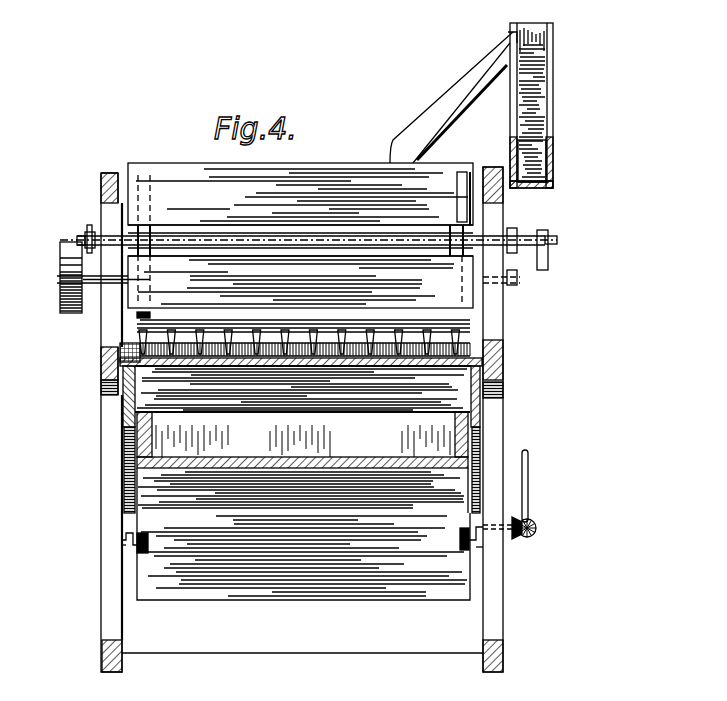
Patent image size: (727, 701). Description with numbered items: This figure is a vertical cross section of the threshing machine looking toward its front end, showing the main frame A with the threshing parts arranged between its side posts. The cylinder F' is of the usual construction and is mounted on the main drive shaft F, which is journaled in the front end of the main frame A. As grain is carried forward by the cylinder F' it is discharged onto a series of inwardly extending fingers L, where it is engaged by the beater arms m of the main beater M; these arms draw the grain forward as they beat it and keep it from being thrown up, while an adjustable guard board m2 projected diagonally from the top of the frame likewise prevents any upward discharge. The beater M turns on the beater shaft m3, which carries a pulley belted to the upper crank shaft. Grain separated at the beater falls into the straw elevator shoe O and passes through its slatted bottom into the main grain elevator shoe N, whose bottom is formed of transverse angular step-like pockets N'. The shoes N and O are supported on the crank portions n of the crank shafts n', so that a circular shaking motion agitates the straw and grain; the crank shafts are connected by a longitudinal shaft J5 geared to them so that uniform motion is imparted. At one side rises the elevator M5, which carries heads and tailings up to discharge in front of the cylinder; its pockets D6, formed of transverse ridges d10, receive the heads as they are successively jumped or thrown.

The main frame A is at (312, 419).
The main beater M is at (300, 233).
The beater arms m is at (288, 256).
The guard board m2 is at (87, 238).
The beater shaft m3 is at (330, 242).
The main drive shaft F is at (56, 288).
The cylinder F' is at (257, 334).
The fingers L is at (112, 360).
The straw elevator shoe O is at (301, 439).
The step-like pockets N' is at (302, 440).
The main grain elevator shoe N is at (302, 490).
The crank portions n is at (303, 556).
The crank shaft n' is at (275, 559).
The longitudinal shaft J5 is at (523, 487).
The elevator M5 is at (550, 113).
The pockets D6 is at (533, 163).
The transverse ridges d10 is at (540, 187).